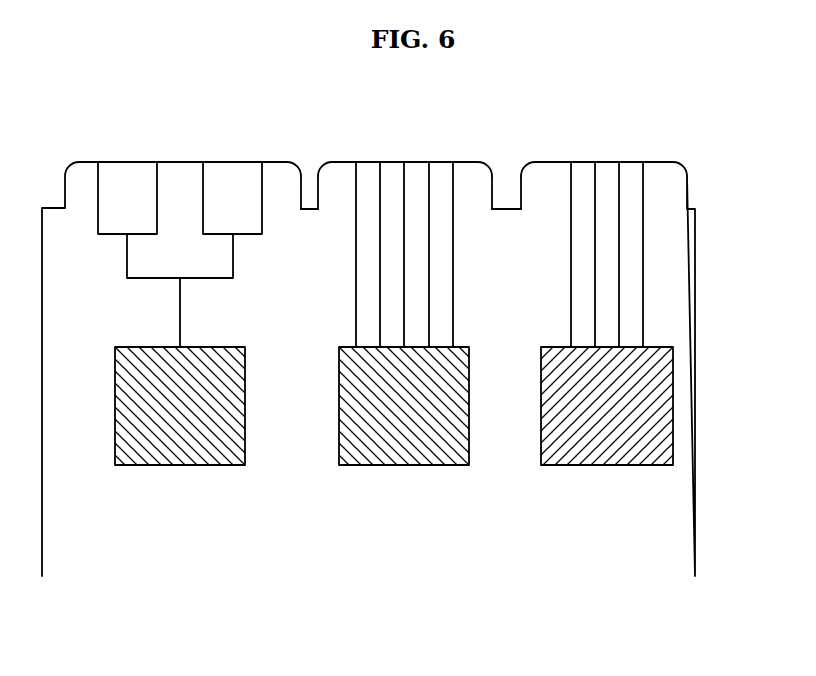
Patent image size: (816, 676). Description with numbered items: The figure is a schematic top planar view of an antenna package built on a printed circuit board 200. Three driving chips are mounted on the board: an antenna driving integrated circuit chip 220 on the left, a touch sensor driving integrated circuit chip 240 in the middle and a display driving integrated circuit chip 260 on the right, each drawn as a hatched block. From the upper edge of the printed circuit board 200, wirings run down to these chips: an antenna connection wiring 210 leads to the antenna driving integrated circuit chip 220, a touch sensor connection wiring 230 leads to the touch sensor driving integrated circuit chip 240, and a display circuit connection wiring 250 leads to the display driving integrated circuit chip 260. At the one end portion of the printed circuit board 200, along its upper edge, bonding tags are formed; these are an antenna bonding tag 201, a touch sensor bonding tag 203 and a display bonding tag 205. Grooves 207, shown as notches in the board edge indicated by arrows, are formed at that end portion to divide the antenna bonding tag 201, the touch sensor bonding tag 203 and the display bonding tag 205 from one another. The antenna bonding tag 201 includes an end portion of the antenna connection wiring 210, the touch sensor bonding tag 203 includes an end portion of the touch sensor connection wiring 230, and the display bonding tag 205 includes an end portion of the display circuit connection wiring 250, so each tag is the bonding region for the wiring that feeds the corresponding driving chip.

The printed circuit board 200 is at (687, 533).
The antenna bonding tag 201 is at (280, 178).
The touch sensor bonding tag 203 is at (470, 178).
The display bonding tag 205 is at (670, 178).
The grooves 207 is at (311, 185).
The antenna connection wiring 210 is at (150, 279).
The antenna driving integrated circuit chip 220 is at (185, 452).
The touch sensor connection wiring 230 is at (453, 262).
The touch sensor driving integrated circuit chip 240 is at (408, 453).
The display circuit connection wiring 250 is at (643, 313).
The display driving integrated circuit chip 260 is at (607, 457).